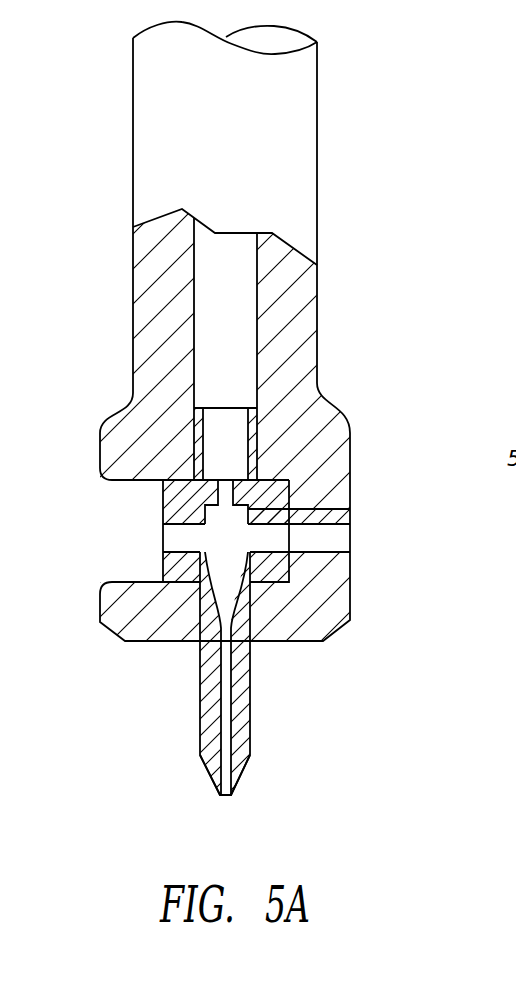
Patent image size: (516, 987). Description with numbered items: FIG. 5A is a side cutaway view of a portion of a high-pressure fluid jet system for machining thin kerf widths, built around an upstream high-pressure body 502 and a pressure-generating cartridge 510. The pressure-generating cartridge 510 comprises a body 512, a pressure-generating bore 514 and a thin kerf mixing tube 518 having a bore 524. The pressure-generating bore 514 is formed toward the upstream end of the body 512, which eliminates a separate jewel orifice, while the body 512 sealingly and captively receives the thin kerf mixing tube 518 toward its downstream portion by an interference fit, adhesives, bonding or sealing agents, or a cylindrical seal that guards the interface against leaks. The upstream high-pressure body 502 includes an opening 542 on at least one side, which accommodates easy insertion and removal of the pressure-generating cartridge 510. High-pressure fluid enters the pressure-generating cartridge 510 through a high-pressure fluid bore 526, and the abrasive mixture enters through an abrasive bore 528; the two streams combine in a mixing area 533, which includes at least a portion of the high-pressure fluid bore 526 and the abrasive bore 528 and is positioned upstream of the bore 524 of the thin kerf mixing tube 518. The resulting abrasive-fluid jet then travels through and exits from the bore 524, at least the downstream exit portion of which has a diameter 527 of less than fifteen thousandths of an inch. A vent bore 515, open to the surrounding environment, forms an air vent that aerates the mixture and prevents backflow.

The upstream high-pressure body 502 is at (317, 220).
The pressure-generating bore 514 is at (227, 468).
The body 512 is at (268, 470).
The vent bore 515 is at (363, 508).
The high-pressure fluid bore 526 is at (232, 526).
The abrasive bore 528 is at (173, 537).
The opening 542 is at (77, 513).
The pressure-generating cartridge 510 is at (149, 556).
The mixing area 533 is at (228, 548).
The thin kerf mixing tube 518 is at (252, 739).
The diameter 527 is at (293, 723).
The bore 524 is at (220, 797).